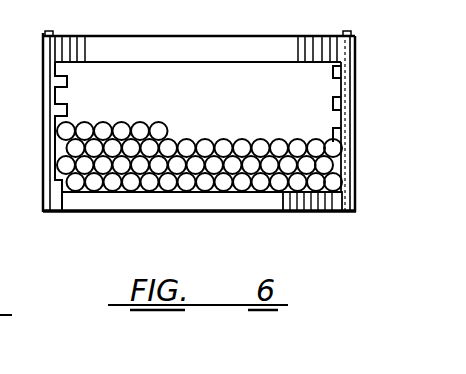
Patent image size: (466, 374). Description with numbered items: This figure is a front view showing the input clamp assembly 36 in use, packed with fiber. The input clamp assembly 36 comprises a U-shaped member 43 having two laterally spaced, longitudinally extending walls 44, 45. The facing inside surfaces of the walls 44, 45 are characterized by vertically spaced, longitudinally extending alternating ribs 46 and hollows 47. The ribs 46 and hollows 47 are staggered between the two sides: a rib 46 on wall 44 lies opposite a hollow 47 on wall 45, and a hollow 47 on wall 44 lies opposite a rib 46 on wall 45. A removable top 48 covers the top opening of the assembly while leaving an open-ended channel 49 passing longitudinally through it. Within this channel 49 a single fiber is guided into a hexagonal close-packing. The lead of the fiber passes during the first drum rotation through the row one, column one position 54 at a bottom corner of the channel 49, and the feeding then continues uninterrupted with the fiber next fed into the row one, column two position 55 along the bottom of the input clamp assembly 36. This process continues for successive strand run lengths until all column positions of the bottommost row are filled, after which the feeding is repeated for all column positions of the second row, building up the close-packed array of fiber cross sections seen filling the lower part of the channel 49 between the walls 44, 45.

The input clamp assembly 36 is at (368, 92).
The U-shaped member 43 is at (273, 203).
The wall 44 is at (50, 148).
The wall 45 is at (352, 117).
The rib 46 is at (333, 103).
The hollow 47 is at (56, 107).
The removable top 48 is at (187, 36).
The open-ended channel 49 is at (219, 105).
The row 1, column 1 position 54 is at (337, 186).
The row 1, column 2 position 55 is at (317, 181).